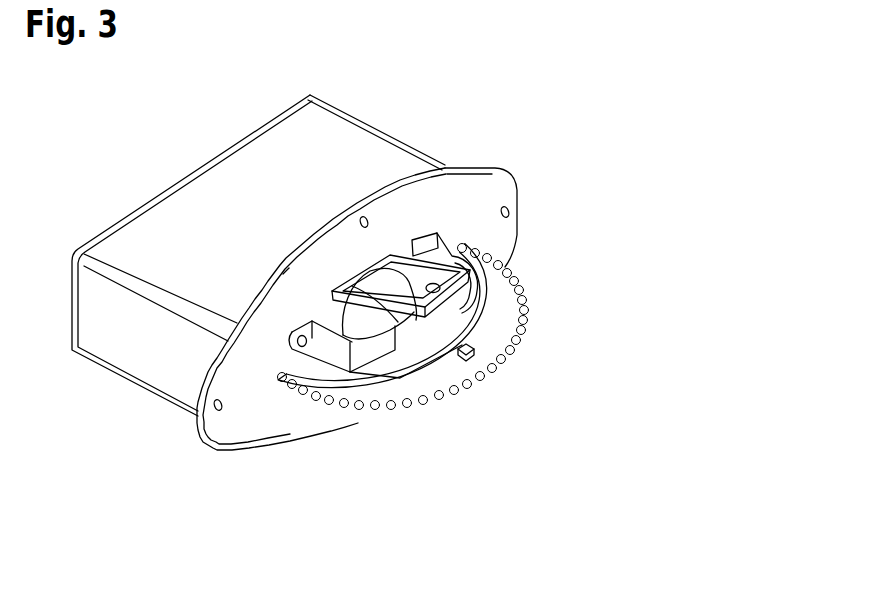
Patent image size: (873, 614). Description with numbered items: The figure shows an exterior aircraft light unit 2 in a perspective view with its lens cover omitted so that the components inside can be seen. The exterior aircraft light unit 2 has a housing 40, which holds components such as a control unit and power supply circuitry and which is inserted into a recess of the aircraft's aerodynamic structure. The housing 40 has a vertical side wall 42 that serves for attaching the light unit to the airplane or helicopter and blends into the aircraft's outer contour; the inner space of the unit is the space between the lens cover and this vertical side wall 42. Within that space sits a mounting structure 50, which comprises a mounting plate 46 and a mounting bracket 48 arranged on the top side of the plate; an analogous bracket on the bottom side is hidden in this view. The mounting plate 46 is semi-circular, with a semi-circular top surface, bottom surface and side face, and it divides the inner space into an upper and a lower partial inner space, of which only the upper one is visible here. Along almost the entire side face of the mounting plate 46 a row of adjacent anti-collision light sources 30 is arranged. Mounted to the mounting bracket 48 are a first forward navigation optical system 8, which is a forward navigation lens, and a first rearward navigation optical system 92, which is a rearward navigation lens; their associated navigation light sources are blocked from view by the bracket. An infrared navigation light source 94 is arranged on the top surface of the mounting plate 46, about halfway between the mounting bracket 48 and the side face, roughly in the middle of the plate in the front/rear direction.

The exterior aircraft light unit 2 is at (675, 145).
The first forward navigation optical system 8 is at (372, 315).
The anti-collision light sources 30 is at (517, 377).
The housing 40 is at (386, 131).
The vertical side wall 42 is at (512, 181).
The mounting plate 46 is at (423, 373).
The mounting bracket 48 is at (373, 357).
The mounting structure 50 is at (500, 516).
The first rearward navigation optical system 92 is at (435, 262).
The infrared navigation light source 94 is at (466, 349).